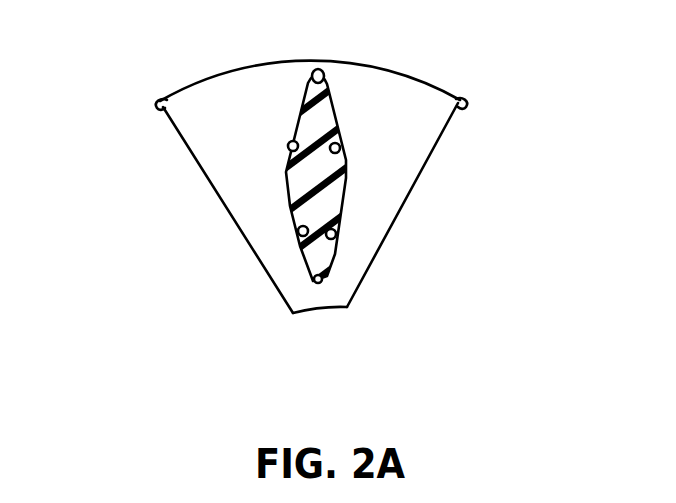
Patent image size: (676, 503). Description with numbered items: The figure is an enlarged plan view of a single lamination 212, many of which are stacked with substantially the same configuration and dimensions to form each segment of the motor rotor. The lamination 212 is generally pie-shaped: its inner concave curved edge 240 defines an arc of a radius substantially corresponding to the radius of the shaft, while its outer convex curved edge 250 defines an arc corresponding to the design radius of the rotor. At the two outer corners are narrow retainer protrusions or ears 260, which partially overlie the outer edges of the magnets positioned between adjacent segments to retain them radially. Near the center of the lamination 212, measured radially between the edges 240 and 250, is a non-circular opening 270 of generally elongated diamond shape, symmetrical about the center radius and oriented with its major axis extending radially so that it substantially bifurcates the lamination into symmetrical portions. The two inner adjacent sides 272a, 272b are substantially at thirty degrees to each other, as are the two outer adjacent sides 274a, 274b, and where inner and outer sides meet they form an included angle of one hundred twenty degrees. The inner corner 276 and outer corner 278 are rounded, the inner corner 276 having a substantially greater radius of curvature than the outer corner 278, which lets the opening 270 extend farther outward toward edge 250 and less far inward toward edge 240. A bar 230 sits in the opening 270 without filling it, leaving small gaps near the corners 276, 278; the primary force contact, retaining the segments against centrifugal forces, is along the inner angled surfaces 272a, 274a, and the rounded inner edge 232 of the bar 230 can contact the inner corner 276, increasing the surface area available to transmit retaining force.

The lamination 212 is at (204, 64).
The bar 230 is at (299, 195).
The rounded inner edge 232 is at (328, 283).
The inner concave curved edge 240 is at (323, 312).
The outer convex curved edge 250 is at (420, 73).
The retainer protrusions or ears 260 is at (160, 104).
The non-circular opening 270 is at (296, 65).
The inner side of opening 272a is at (303, 234).
The inner side of opening 272b is at (293, 148).
The outer side of opening 274a is at (333, 242).
The outer side of opening 274b is at (337, 150).
The inner corner 276 is at (312, 284).
The outer corner 278 is at (323, 78).